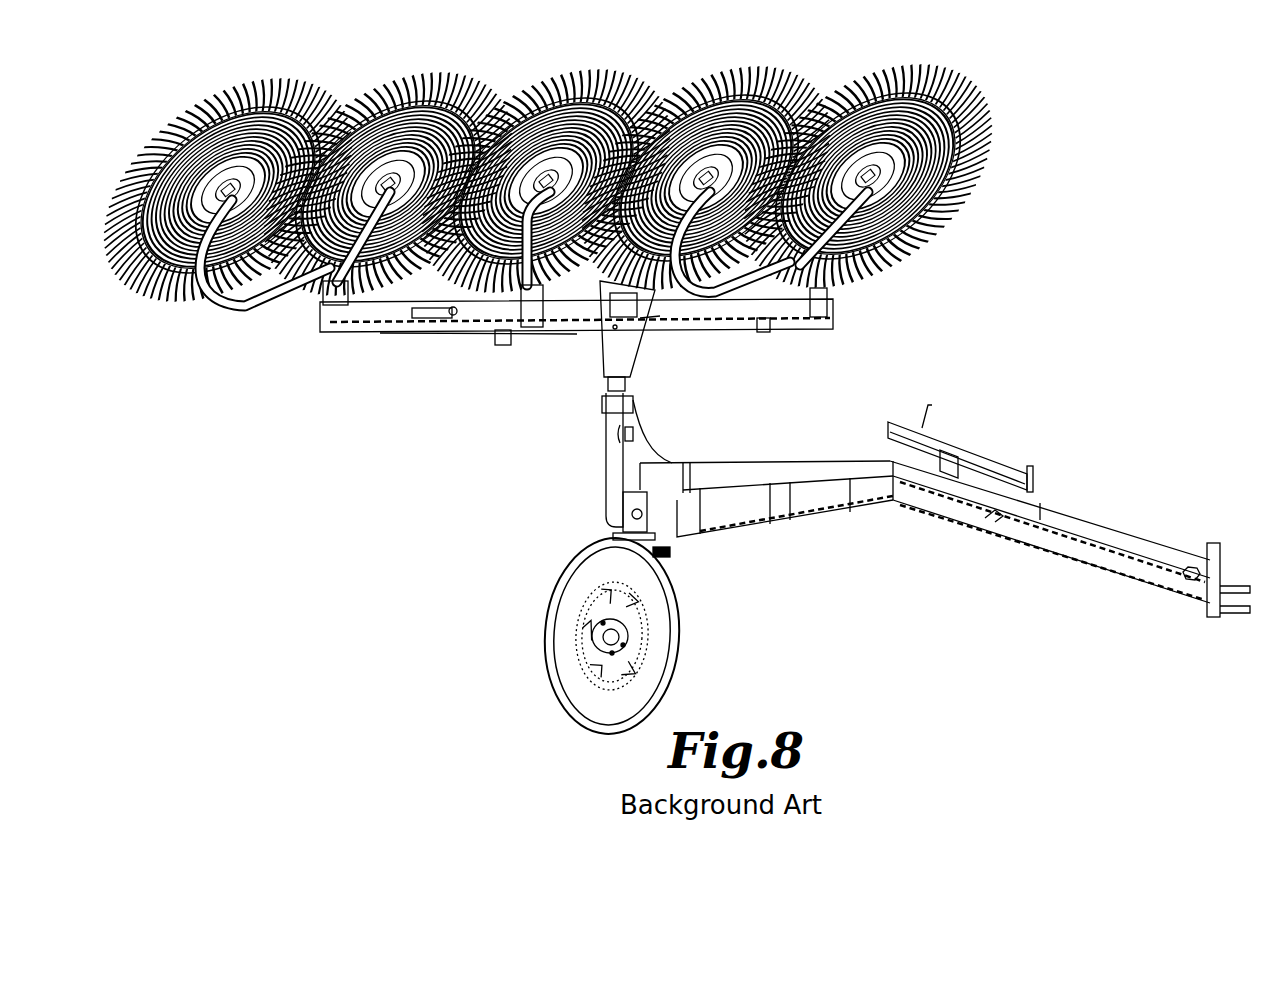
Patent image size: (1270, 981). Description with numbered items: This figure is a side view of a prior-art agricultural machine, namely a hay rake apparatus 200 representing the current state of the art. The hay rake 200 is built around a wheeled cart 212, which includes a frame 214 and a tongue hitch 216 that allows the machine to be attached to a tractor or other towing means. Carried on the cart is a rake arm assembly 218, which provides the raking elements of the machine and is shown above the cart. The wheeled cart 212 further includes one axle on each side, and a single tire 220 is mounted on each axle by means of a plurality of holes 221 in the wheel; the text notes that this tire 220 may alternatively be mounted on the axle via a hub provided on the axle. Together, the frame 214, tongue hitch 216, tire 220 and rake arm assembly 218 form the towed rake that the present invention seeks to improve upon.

The hay rake apparatus 200 is at (1010, 388).
The wheeled cart 212 is at (823, 462).
The frame 214 is at (731, 521).
The tongue hitch 216 is at (1118, 548).
The rake arm assembly 218 is at (972, 65).
The single tire 220 is at (663, 647).
The holes 221 is at (623, 645).